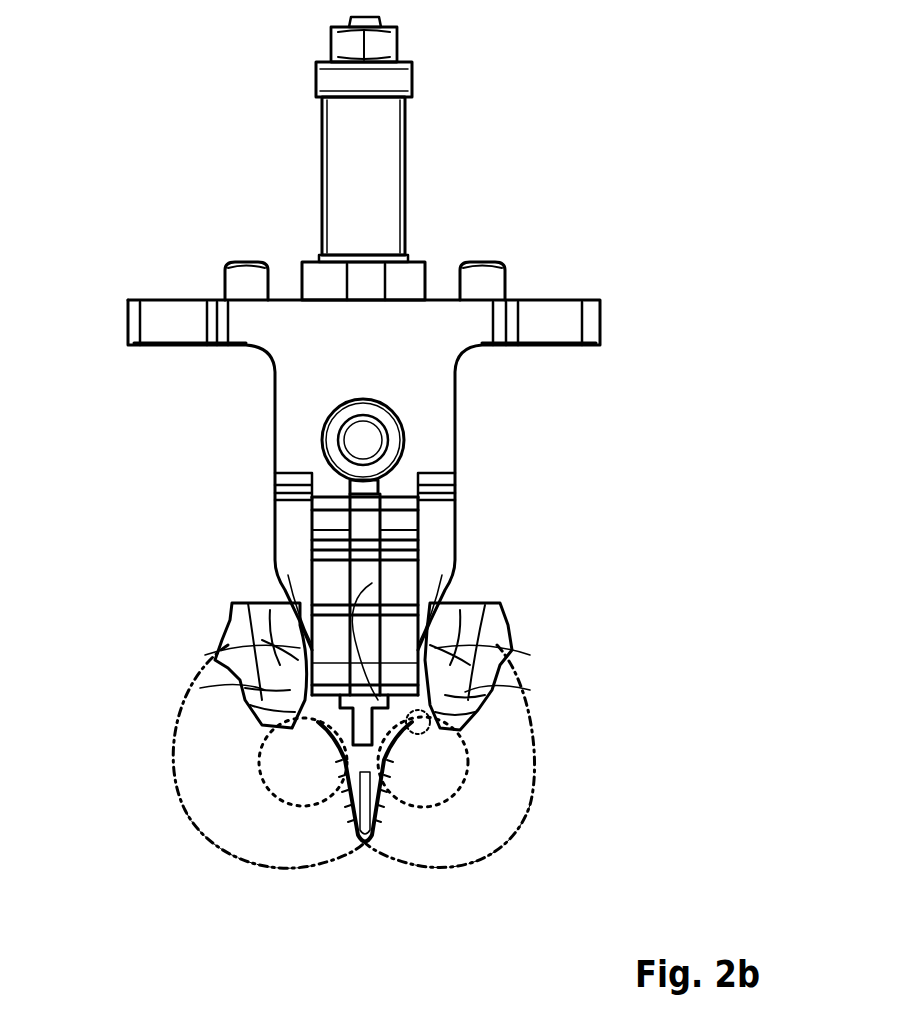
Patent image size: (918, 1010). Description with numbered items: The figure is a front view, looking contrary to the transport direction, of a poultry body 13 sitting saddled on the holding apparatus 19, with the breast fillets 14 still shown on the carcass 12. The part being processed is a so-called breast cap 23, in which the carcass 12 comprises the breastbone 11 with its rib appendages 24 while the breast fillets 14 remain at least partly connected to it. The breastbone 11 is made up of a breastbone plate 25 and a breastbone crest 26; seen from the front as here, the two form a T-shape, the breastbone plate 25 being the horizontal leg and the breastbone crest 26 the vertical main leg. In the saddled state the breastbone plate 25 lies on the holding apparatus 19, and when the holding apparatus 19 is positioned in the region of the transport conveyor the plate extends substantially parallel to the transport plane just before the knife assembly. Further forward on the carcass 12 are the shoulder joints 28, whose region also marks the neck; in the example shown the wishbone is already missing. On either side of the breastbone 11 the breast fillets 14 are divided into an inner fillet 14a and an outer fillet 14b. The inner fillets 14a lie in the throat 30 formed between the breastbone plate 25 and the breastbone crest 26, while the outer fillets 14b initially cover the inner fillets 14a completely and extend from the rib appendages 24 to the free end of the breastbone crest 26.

The holding apparatus 19 is at (520, 412).
The breastbone 11 is at (410, 815).
The carcass 12 is at (228, 607).
The poultry bodies 13 is at (520, 617).
The breast cap 23 is at (468, 666).
The rib appendages 24 is at (236, 686).
The breastbone plate 25 is at (440, 745).
The breastbone crest 26 is at (363, 832).
The shoulder joints 28 is at (228, 656).
The throat 30 is at (440, 590).
The breast fillets 14 is at (178, 817).
The inner fillet 14a is at (440, 768).
The outer fillet 14b is at (505, 790).